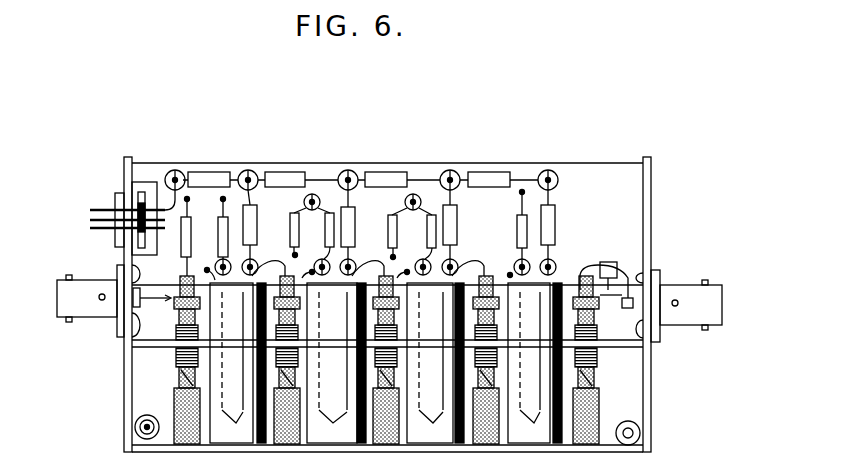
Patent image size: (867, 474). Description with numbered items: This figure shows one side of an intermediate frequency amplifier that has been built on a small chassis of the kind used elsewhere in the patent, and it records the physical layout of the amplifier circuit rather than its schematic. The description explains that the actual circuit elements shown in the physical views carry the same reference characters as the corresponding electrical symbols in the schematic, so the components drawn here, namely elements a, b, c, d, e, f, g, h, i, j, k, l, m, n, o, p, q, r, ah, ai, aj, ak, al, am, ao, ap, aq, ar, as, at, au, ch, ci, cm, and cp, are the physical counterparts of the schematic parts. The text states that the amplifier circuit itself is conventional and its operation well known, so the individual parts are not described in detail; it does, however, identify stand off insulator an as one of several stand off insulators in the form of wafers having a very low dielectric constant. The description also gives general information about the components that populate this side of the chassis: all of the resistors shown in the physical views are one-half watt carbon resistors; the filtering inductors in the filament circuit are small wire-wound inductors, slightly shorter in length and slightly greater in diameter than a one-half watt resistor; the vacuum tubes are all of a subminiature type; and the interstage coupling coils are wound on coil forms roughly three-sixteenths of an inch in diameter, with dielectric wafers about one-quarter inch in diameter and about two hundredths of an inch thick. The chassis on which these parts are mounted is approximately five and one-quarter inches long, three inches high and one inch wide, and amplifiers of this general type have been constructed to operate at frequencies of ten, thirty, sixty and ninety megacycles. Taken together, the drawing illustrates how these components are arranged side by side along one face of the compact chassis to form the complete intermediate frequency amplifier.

The plug connector a is at (90, 212).
The lamp b is at (175, 170).
The resistor c is at (208, 172).
The lamp d is at (250, 170).
The resistor e is at (290, 172).
The lamp f is at (350, 170).
The resistor g is at (400, 172).
The lamp h is at (452, 170).
The resistor i is at (495, 172).
The lamp j is at (552, 170).
The resistor k is at (257, 222).
The lamp l is at (257, 268).
The resistor m is at (357, 215).
The lamp n is at (357, 265).
The resistor o is at (457, 225).
The lamp p is at (458, 265).
The resistor q is at (556, 226).
The lamp r is at (556, 270).
The lamp ah is at (222, 259).
The lamp ai is at (323, 245).
The resistor aj is at (325, 230).
The lamp ak is at (318, 199).
The resistor al is at (292, 225).
The lamp am is at (427, 243).
The stand off insulator an is at (427, 230).
The lamp ao is at (420, 200).
The resistor ap is at (388, 230).
The resistor aq is at (218, 225).
The lamp ar is at (517, 228).
The terminal as is at (201, 268).
The terminal at is at (312, 272).
The terminal au is at (407, 272).
The terminal block ch is at (627, 245).
The output connector ci is at (725, 325).
The input connector cm is at (100, 318).
The resistor cp is at (185, 252).